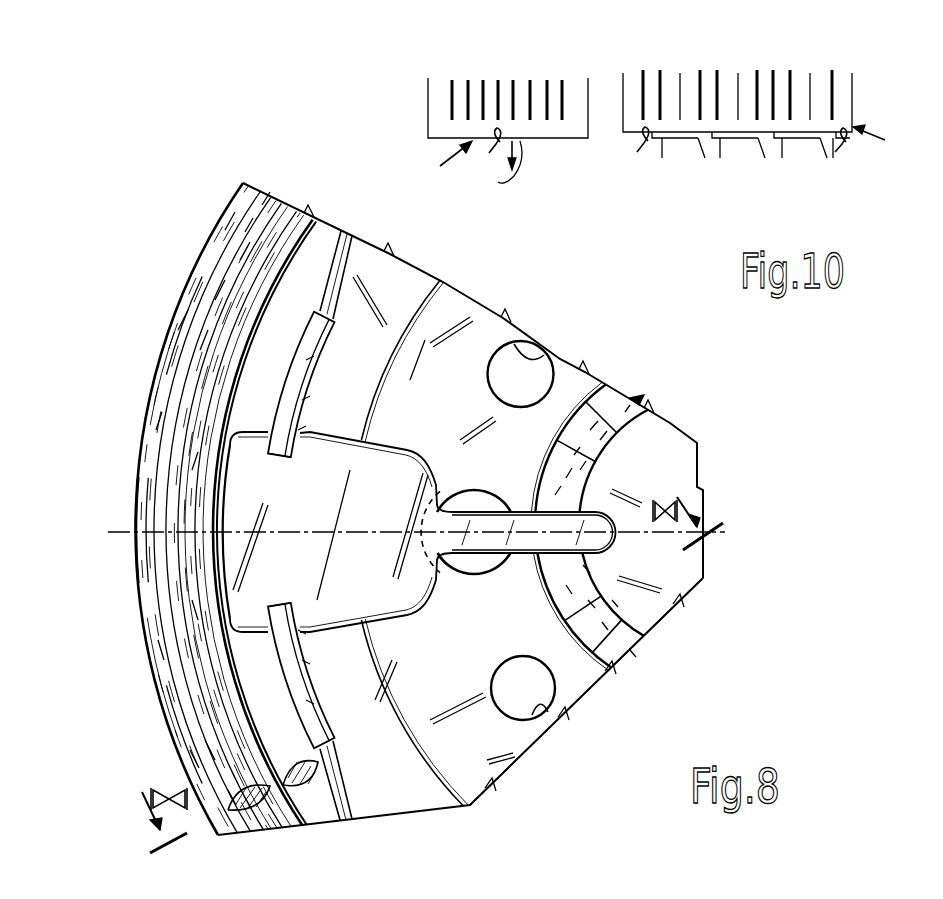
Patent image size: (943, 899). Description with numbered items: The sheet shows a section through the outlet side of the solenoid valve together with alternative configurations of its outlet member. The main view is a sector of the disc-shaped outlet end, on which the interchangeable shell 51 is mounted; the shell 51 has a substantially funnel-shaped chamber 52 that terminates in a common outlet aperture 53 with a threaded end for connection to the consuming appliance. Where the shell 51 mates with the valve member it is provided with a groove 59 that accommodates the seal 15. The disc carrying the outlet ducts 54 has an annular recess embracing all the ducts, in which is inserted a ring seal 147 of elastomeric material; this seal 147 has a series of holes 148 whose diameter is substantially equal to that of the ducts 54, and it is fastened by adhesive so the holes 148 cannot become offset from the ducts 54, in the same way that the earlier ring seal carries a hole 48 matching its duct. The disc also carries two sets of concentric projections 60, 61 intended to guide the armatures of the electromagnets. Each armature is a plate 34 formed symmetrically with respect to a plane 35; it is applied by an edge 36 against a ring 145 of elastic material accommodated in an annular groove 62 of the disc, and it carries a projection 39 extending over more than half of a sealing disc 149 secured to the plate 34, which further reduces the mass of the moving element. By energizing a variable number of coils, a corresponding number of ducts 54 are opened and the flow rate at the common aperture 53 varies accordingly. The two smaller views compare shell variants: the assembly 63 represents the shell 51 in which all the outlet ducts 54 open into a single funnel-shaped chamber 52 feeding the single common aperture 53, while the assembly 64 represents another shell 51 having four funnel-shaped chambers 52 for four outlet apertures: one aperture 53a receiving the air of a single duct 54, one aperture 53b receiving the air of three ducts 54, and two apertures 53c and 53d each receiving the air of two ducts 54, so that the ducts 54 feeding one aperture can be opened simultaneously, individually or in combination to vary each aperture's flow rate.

In FIG. 8, the ring of elastic material 145 is at (330, 232).
In FIG. 8, the seal 15 is at (205, 718).
In FIG. 8, the plane of symmetry 35 is at (121, 532).
In FIG. 8, the edge 36 is at (228, 552).
In FIG. 8, the plate 34 is at (490, 590).
In FIG. 8, the projection 39 is at (522, 512).
In FIG. 8, the sealing disc 149 is at (455, 493).
In FIG. 8, the concentric projections 61 is at (578, 488).
In FIG. 8, the concentric projections 60 is at (316, 368).
In FIG. 8, the hole 48 is at (528, 356).
In FIG. 8, the holes 148 is at (548, 700).
In FIG. 8, the ring seal 147 is at (487, 765).
In FIG. 8, the groove 59 is at (262, 824).
In FIG. 8, the annular groove 62 is at (337, 815).
In FIG. 10, the shell 51 is at (556, 140).
In FIG. 10, the outlet ducts 54 is at (562, 76).
In FIG. 10, the funnel-shaped chamber 52 is at (492, 150).
In FIG. 10, the common outlet aperture 53 is at (518, 178).
In FIG. 10, the outlet aperture 53a is at (836, 160).
In FIG. 10, the outlet aperture 53b is at (782, 160).
In FIG. 10, the outlet aperture 53c is at (722, 160).
In FIG. 10, the outlet aperture 53d is at (660, 160).
In FIG. 10, the assembly 63 is at (445, 161).
In FIG. 10, the assembly 64 is at (885, 140).